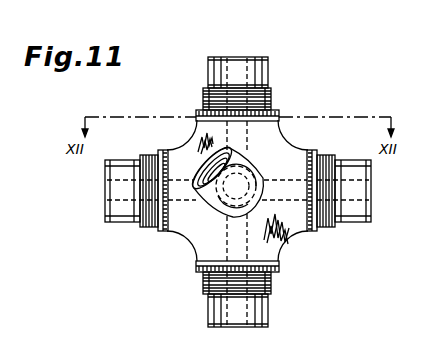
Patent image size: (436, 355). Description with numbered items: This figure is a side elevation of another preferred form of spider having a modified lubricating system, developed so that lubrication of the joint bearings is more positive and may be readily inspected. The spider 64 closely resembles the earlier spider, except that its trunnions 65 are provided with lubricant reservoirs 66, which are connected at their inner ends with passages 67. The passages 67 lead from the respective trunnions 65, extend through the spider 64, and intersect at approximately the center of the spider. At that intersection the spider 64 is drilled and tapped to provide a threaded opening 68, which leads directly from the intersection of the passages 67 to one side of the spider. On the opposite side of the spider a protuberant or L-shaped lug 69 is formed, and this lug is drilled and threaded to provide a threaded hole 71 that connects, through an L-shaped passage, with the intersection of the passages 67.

The spider 64 is at (272, 138).
The trunnions 65 is at (218, 75).
The lubricant reservoirs 66 is at (236, 65).
The passages 67 is at (228, 146).
The threaded opening 68 is at (255, 172).
The L-shaped lug 69 is at (208, 205).
The threaded hole 71 is at (210, 168).